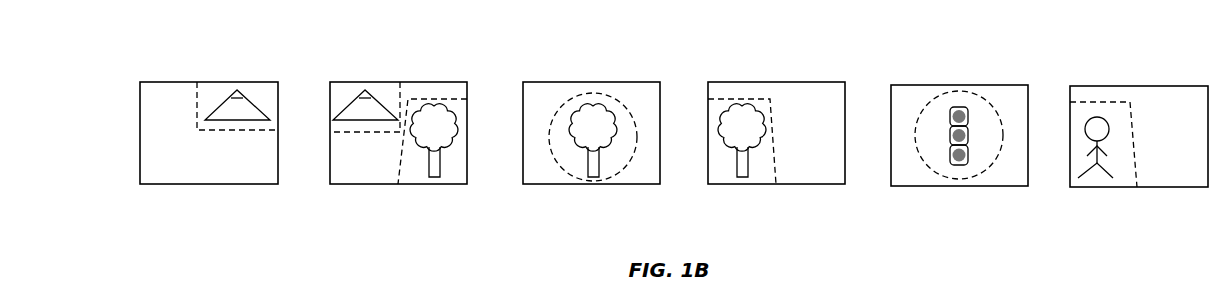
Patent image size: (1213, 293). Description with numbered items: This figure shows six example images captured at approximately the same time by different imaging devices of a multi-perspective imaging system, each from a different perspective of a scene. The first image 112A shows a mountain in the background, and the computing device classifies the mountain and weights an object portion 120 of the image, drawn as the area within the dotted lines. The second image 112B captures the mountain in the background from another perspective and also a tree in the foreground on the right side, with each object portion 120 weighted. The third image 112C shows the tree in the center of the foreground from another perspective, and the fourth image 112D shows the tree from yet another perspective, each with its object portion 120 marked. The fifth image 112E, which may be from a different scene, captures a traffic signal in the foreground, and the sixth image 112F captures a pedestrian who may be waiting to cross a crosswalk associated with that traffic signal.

The first image 112A is at (192, 82).
The second image 112B is at (387, 82).
The third image 112C is at (585, 82).
The fourth image 112D is at (762, 82).
The fifth image 112E is at (932, 85).
The sixth image 112F is at (1113, 86).
The object portion 120 is at (277, 82).